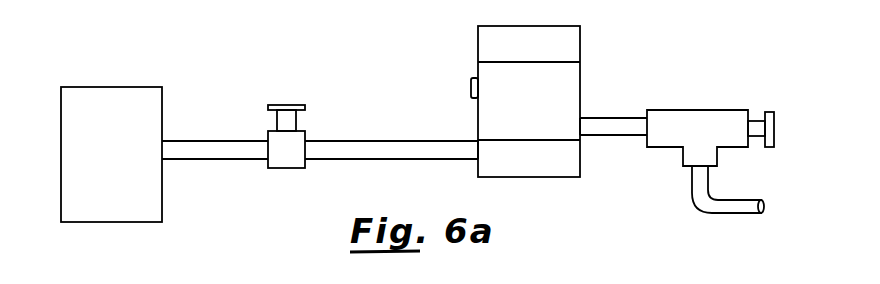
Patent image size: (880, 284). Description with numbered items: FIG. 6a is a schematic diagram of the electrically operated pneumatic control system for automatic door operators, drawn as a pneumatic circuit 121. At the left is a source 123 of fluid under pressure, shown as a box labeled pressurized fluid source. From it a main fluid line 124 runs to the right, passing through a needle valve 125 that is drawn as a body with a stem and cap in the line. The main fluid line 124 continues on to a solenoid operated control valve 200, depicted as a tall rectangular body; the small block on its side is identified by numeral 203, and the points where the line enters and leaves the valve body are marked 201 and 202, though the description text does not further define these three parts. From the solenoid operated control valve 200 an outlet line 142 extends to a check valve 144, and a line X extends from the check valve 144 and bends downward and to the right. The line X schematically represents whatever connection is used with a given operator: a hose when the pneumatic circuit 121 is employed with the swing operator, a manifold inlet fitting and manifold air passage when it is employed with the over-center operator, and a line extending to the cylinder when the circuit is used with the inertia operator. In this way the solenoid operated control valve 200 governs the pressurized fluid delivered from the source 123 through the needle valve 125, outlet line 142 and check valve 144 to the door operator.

The source of fluid under pressure 123 is at (143, 247).
The main fluid line 124 is at (199, 137).
The pneumatic circuit 121 is at (390, 160).
The needle valve 125 is at (280, 167).
The solenoid operated control valve 200 is at (576, 77).
The solenoid 203 is at (477, 75).
The inlet port 201 is at (476, 163).
The outlet port 202 is at (582, 137).
The outlet line 142 is at (608, 118).
The check valve 144 is at (713, 108).
The line X is at (731, 215).